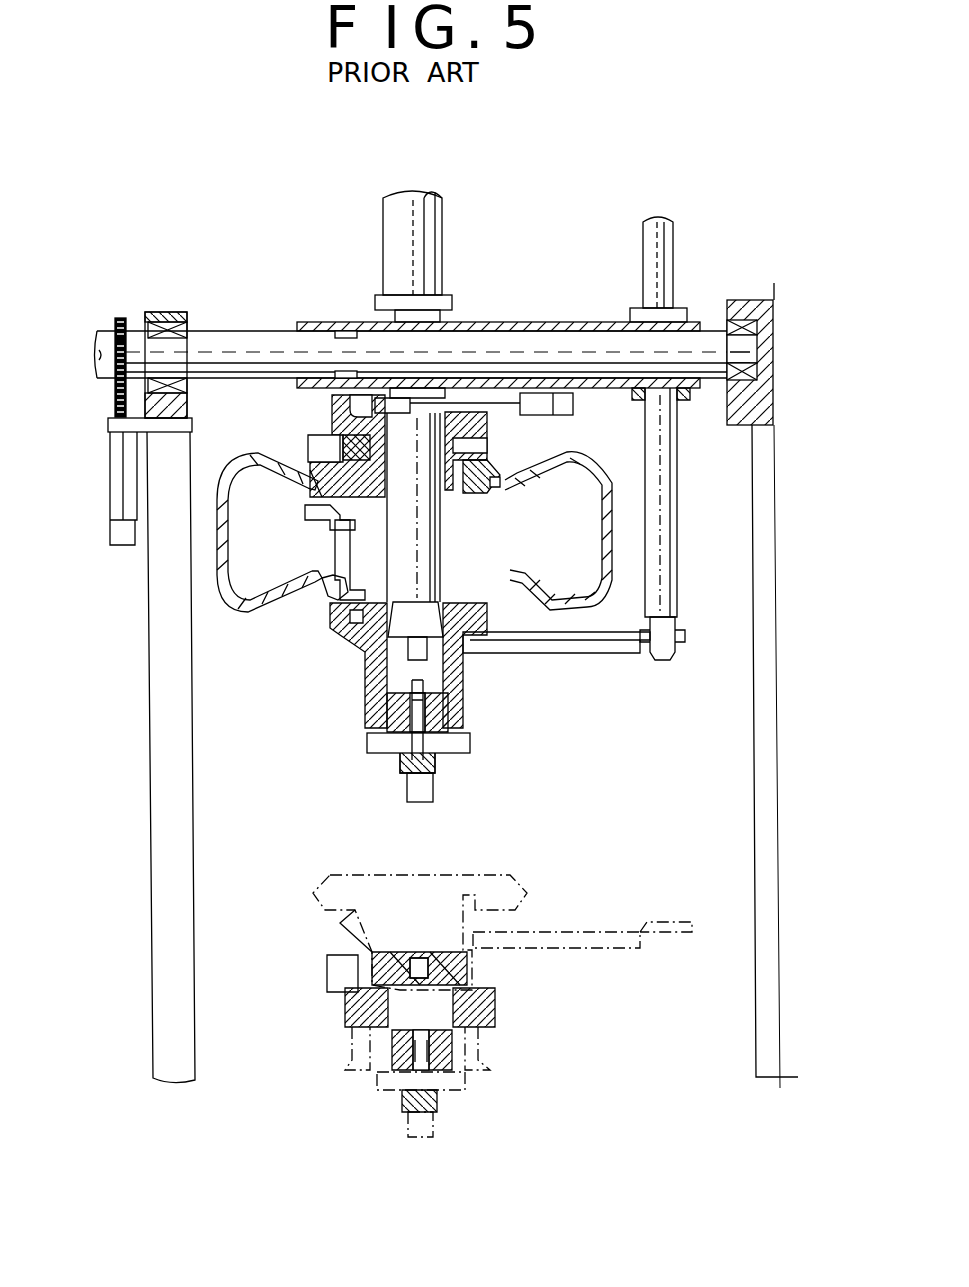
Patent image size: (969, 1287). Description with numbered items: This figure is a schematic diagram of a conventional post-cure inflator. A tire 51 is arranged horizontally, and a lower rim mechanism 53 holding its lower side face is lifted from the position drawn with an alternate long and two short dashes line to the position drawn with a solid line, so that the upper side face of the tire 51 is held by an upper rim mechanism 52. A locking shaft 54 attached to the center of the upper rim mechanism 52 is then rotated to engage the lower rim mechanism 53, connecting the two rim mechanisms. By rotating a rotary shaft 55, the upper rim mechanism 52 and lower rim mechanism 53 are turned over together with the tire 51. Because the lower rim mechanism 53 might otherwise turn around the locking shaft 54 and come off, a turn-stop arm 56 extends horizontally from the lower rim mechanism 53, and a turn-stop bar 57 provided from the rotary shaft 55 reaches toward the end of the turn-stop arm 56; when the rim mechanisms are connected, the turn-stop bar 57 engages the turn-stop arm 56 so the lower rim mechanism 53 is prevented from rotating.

The tire 51 is at (248, 613).
The upper rim mechanism 52 is at (502, 442).
The lower rim mechanism 53 is at (475, 696).
The locking shaft 54 is at (452, 548).
The rotary shaft 55 is at (262, 344).
The turn-stop arm 56 is at (610, 653).
The turn-stop bar 57 is at (680, 545).